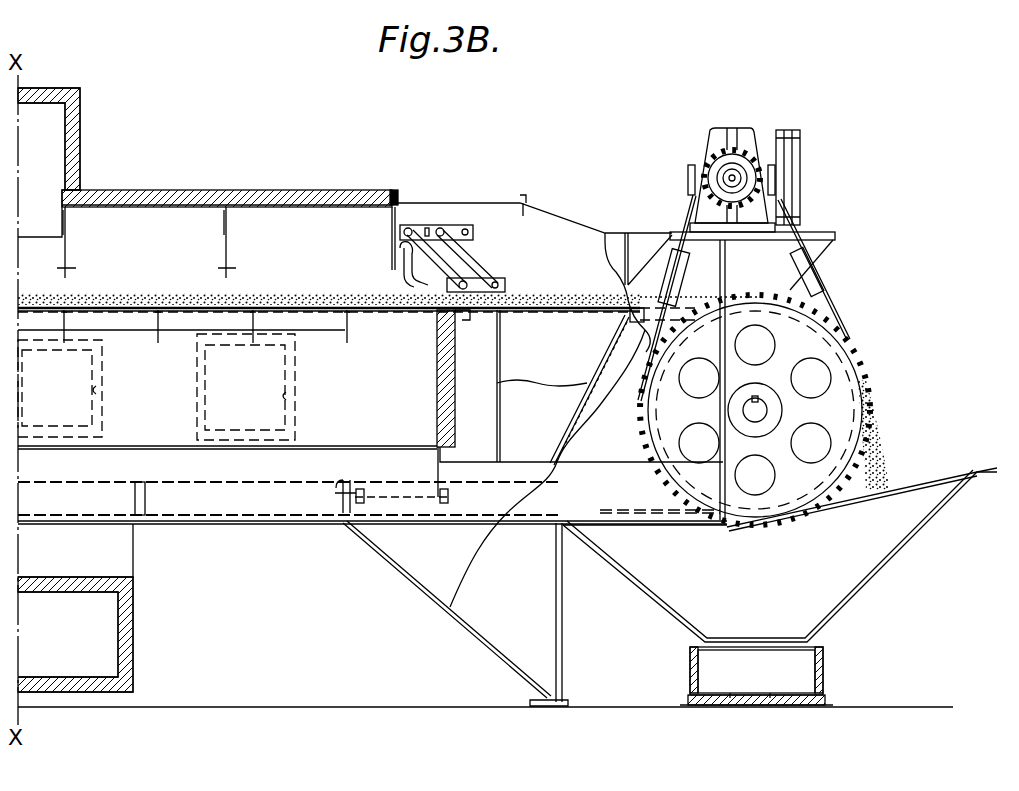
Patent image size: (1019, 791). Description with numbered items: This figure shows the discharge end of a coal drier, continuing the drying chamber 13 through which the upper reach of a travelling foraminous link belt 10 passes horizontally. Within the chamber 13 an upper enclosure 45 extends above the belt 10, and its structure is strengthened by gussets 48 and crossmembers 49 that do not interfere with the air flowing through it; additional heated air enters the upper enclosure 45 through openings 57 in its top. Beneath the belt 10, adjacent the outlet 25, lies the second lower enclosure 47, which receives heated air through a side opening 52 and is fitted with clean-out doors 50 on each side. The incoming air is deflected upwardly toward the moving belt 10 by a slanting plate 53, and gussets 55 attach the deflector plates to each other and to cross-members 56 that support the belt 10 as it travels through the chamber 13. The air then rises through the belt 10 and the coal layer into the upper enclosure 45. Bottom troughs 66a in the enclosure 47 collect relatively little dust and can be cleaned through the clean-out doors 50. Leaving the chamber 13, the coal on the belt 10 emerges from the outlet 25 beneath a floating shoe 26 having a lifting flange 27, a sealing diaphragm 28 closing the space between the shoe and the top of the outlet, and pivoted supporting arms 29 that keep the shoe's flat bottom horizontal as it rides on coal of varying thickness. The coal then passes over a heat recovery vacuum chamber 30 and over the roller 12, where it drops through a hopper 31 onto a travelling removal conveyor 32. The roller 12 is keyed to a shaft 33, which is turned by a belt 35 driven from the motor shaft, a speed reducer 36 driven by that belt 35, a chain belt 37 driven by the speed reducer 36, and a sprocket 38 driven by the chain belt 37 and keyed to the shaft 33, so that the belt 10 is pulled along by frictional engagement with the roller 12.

The travelling foraminous link belt 10 is at (197, 312).
The roller 12 is at (862, 392).
The drying enclosure or chamber 13 is at (284, 198).
The outlet 25 is at (423, 306).
The floating shoe 26 is at (474, 290).
The lifting flange 27 is at (402, 305).
The sealing diaphragm 28 is at (398, 258).
The pivoted supporting arms 29 is at (442, 262).
The heat recovery vacuum chamber 30 is at (542, 386).
The hopper 31 is at (870, 548).
The travelling removal conveyor 32 is at (798, 666).
The shaft 33 is at (764, 418).
The belt 35 is at (792, 160).
The speed reducer 36 is at (716, 140).
The chain belt 37 is at (822, 292).
The sprocket 38 is at (840, 362).
The upper enclosure 45 is at (125, 212).
The second lower enclosure 47 is at (398, 390).
The gussets 48 is at (65, 230).
The crossmembers 49 is at (60, 270).
The clean-out doors 50 is at (288, 398).
The side opening 52 is at (98, 392).
The slanting plate 53 is at (155, 408).
The gussets 55 is at (158, 332).
The cross-members 56 is at (155, 313).
The openings 57 is at (45, 120).
The bottom troughs 66a is at (267, 522).